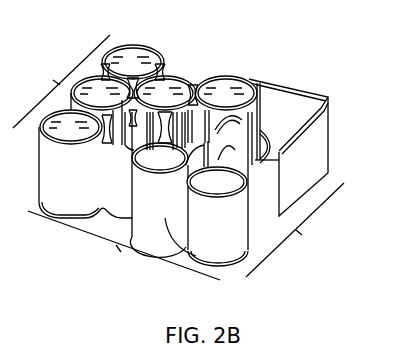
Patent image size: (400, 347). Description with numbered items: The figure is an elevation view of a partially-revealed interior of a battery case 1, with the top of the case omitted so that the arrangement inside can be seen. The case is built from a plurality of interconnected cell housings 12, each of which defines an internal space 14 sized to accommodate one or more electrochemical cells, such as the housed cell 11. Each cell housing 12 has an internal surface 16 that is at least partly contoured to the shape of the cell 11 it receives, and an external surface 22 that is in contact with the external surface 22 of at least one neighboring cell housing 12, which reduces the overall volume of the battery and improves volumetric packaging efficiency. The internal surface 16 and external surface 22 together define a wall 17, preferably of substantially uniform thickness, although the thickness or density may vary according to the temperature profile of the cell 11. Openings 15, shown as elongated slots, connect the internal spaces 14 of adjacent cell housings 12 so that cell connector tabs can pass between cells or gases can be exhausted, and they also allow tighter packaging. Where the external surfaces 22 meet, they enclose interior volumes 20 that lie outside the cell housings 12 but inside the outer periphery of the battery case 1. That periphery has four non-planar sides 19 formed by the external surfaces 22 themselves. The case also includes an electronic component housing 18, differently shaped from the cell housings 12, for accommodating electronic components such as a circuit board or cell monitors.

The battery case 1 is at (309, 41).
The cell 11 is at (104, 88).
The cell housing 12 is at (234, 82).
The internal space 14 is at (262, 150).
The opening 15 is at (170, 178).
The internal surface 16 is at (215, 176).
The wall 17 is at (113, 145).
The electronic component housing 18 is at (296, 100).
The non-planar side 19 is at (178, 157).
The interior volume 20 is at (156, 166).
The external surface 22 is at (211, 228).